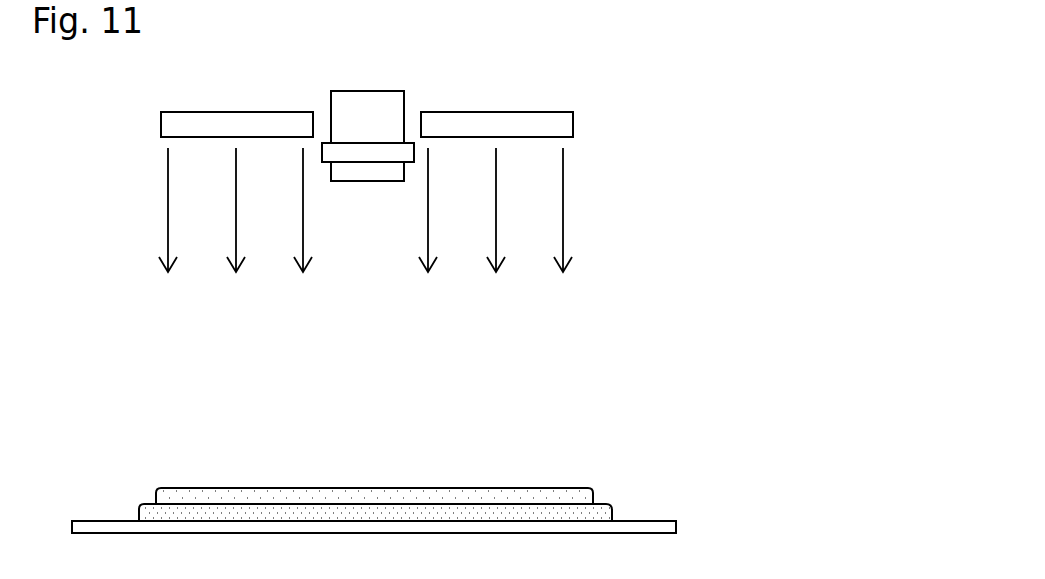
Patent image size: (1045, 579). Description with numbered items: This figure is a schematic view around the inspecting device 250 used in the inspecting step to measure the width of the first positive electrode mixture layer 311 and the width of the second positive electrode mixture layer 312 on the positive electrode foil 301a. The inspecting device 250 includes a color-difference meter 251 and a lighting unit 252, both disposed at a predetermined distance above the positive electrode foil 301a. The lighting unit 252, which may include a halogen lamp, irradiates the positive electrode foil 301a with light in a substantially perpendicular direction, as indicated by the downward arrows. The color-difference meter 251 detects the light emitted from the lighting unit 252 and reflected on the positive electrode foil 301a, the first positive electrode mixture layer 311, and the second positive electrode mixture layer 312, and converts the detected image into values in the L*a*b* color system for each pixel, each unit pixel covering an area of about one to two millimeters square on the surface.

The inspecting device 250 is at (600, 85).
The color-difference meter 251 is at (365, 108).
The lighting unit 252 is at (456, 124).
The positive electrode foil 301a is at (393, 523).
The first positive electrode mixture layer 311 is at (471, 513).
The second positive electrode mixture layer 312 is at (533, 493).